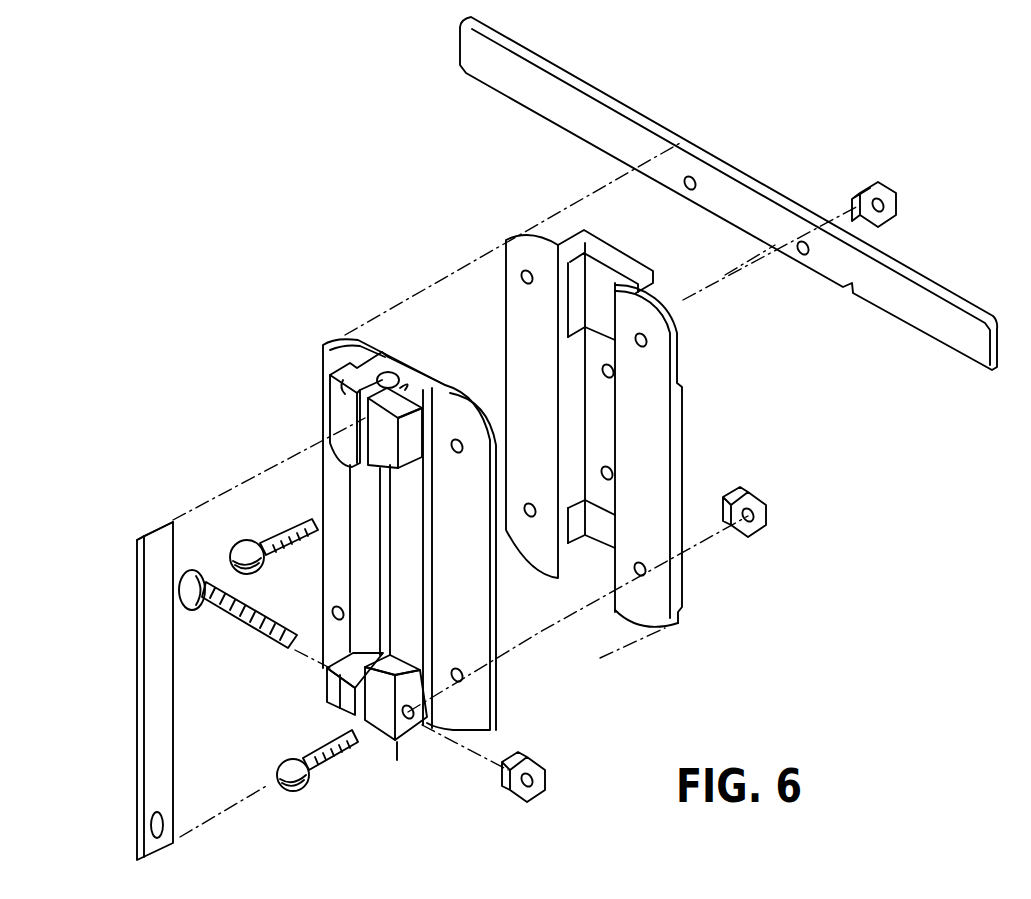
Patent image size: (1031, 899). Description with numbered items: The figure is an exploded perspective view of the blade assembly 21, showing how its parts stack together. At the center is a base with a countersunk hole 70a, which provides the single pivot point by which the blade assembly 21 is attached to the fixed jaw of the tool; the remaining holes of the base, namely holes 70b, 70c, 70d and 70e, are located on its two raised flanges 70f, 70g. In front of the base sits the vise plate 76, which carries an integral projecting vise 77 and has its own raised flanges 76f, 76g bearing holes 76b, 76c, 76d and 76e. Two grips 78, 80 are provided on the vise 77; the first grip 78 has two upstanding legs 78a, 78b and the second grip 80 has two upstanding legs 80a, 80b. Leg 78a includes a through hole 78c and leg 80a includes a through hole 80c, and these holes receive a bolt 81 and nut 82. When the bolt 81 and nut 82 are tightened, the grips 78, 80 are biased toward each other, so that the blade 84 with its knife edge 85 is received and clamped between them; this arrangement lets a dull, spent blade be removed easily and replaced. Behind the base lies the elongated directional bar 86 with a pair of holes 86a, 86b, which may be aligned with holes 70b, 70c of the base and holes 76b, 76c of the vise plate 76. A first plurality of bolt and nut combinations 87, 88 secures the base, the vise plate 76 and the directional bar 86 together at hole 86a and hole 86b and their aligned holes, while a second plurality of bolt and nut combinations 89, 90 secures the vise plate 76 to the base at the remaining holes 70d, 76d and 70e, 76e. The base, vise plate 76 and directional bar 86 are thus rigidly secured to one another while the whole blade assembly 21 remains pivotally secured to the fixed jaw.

The blade assembly 21 is at (784, 87).
The countersunk hole 70a is at (614, 370).
The hole 70b is at (524, 268).
The hole 70c is at (647, 338).
The hole 70d is at (530, 517).
The hole 70e is at (646, 569).
The raised flange 70f is at (549, 357).
The raised flange 70g is at (664, 447).
The vise plate 76 is at (459, 507).
The hole 76b is at (330, 372).
The hole 76c is at (457, 439).
The hole 76d is at (333, 611).
The hole 76e is at (464, 677).
The raised flange 76f is at (323, 498).
The raised flange 76g is at (488, 610).
The projecting vise 77 is at (397, 760).
The grip 78 is at (342, 410).
The upstanding leg 78a is at (325, 704).
The upstanding leg 78b is at (340, 430).
The through hole 78c is at (326, 682).
The grip 80 is at (455, 729).
The upstanding leg 80a is at (415, 745).
The upstanding leg 80b is at (400, 388).
The through hole 80c is at (414, 712).
The bolt 81 is at (192, 570).
The nut 82 is at (548, 775).
The blade 84 is at (137, 603).
The knife edge 85 is at (138, 697).
The elongated directional bar 86 is at (930, 280).
The hole 86a is at (696, 178).
The hole 86b is at (806, 242).
The bolt 87 is at (244, 540).
The nut 88 is at (893, 198).
The bolt 89 is at (296, 791).
The nut 90 is at (757, 500).